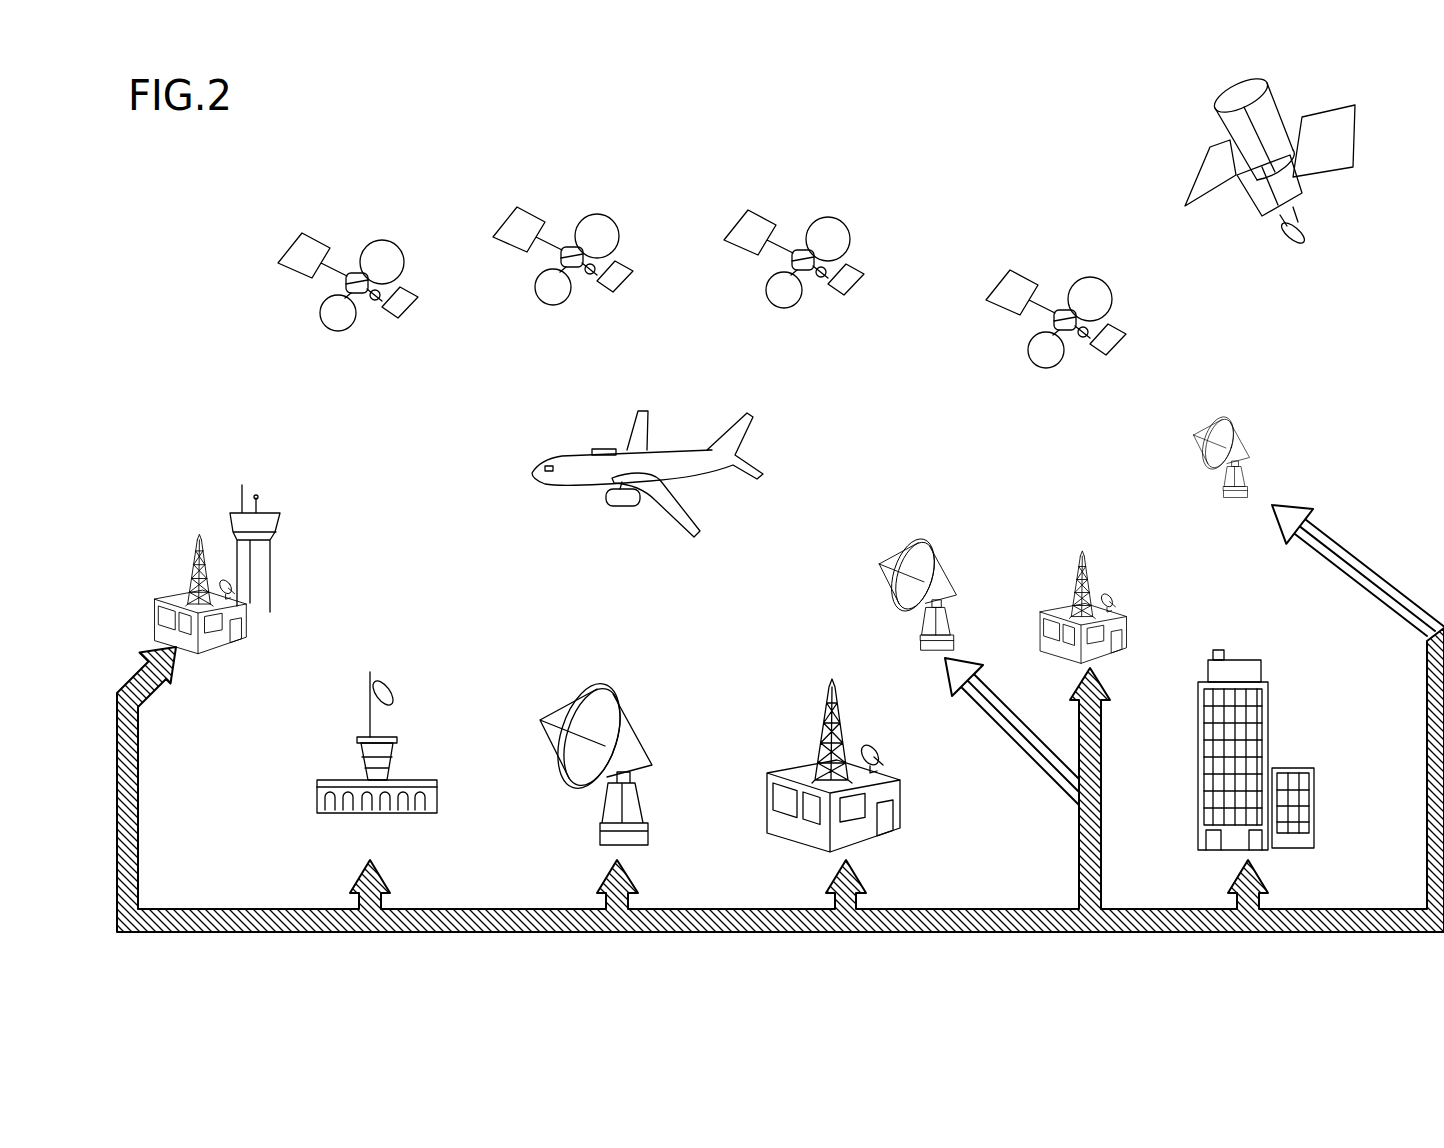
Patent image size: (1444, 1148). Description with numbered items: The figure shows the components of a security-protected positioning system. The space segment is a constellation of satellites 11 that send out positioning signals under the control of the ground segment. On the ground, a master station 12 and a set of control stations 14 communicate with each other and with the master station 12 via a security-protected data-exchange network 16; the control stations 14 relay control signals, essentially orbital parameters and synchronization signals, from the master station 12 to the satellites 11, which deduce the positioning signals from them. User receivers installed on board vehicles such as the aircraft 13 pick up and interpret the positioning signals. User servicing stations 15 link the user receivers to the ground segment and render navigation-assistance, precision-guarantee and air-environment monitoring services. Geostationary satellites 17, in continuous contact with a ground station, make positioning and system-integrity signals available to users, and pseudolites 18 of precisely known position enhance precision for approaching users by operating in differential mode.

The constellation of satellites 11 is at (353, 242).
The master station 12 is at (1290, 751).
The aircraft 13 is at (558, 454).
The control stations 14 is at (656, 759).
The user servicing stations 15 is at (171, 578).
The security-protected data-exchange network 16 is at (478, 905).
The geostationary satellites 17 is at (1191, 186).
The pseudolites 18 is at (321, 778).